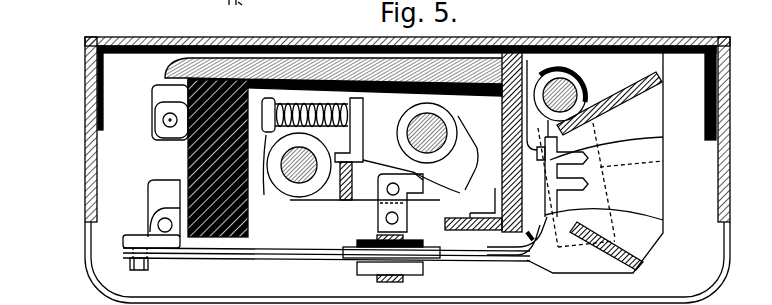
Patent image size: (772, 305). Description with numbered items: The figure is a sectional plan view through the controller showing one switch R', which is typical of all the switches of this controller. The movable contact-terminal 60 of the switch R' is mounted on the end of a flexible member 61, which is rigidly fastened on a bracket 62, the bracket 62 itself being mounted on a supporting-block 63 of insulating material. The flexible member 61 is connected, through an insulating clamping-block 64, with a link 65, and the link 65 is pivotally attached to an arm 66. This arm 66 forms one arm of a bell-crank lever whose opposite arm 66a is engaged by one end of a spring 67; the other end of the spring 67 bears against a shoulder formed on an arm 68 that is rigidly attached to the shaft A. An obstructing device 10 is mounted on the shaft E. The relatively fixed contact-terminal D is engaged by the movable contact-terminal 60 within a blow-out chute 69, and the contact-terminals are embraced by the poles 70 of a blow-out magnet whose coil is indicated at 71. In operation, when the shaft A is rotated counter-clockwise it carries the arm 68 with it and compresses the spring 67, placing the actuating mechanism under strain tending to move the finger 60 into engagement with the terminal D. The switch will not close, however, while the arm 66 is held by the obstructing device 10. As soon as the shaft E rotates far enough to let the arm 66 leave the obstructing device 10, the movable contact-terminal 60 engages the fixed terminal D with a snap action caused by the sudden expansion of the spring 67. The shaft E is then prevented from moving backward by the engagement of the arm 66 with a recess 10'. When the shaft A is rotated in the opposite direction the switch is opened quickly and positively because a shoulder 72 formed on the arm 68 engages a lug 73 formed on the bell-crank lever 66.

The obstructing device 10 is at (478, 153).
The recess 10' is at (473, 209).
The movable contact-terminal 60 is at (663, 220).
The flexible member 61 is at (325, 259).
The bracket 62 is at (168, 242).
The supporting-block 63 is at (188, 152).
The insulating clamping-block 64 is at (375, 238).
The link 65 is at (383, 208).
The arm 66 is at (370, 178).
The opposite arm 66a is at (270, 175).
The spring 67 is at (345, 101).
The arm 68 is at (352, 121).
The blow-out chute 69 is at (628, 183).
The poles 70 is at (663, 161).
The coil 71 is at (588, 81).
The shoulder 72 is at (357, 150).
The lug 73 is at (336, 201).
The shaft A is at (299, 166).
The shaft E is at (433, 130).
The relatively fixed contact-terminal D is at (663, 137).
The switch R' is at (510, 253).